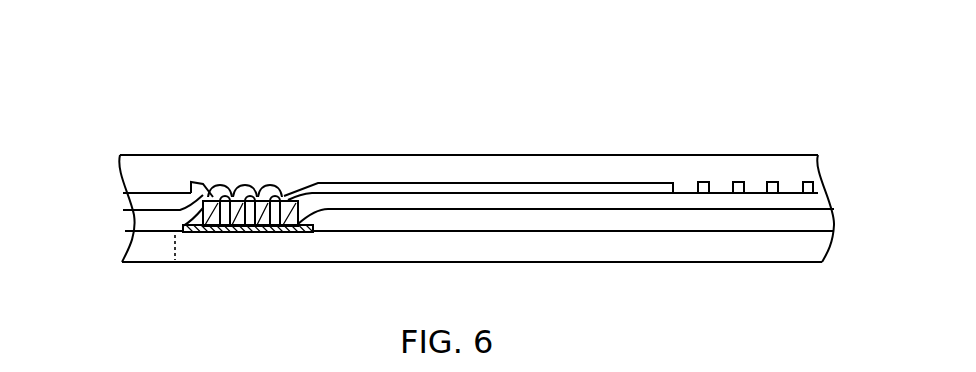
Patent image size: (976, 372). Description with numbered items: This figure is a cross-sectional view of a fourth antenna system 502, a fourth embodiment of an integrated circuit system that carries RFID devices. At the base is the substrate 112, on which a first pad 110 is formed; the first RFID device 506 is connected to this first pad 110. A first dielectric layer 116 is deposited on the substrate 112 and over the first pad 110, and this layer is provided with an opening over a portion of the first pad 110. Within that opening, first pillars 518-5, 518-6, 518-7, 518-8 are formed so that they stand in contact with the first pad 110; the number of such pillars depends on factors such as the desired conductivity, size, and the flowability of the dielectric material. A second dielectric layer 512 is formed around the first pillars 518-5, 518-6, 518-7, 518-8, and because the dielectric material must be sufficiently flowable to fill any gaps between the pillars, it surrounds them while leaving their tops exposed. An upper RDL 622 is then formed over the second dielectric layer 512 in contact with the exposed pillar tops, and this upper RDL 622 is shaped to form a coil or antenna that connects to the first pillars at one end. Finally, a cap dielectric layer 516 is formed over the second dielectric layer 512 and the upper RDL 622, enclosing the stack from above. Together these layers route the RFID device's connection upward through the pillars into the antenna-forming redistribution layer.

The fourth antenna system 502 is at (107, 41).
The cap dielectric layer 516 is at (132, 170).
The second dielectric layer 512 is at (132, 202).
The first dielectric layer 116 is at (133, 232).
The substrate 112 is at (133, 247).
The first RFID device 506 is at (359, 260).
The first pad 110 is at (233, 233).
The first pillar 518-5 is at (197, 180).
The first pillar 518-6 is at (237, 187).
The first pillar 518-7 is at (258, 185).
The first pillar 518-8 is at (287, 187).
The upper RDL 622 is at (367, 185).